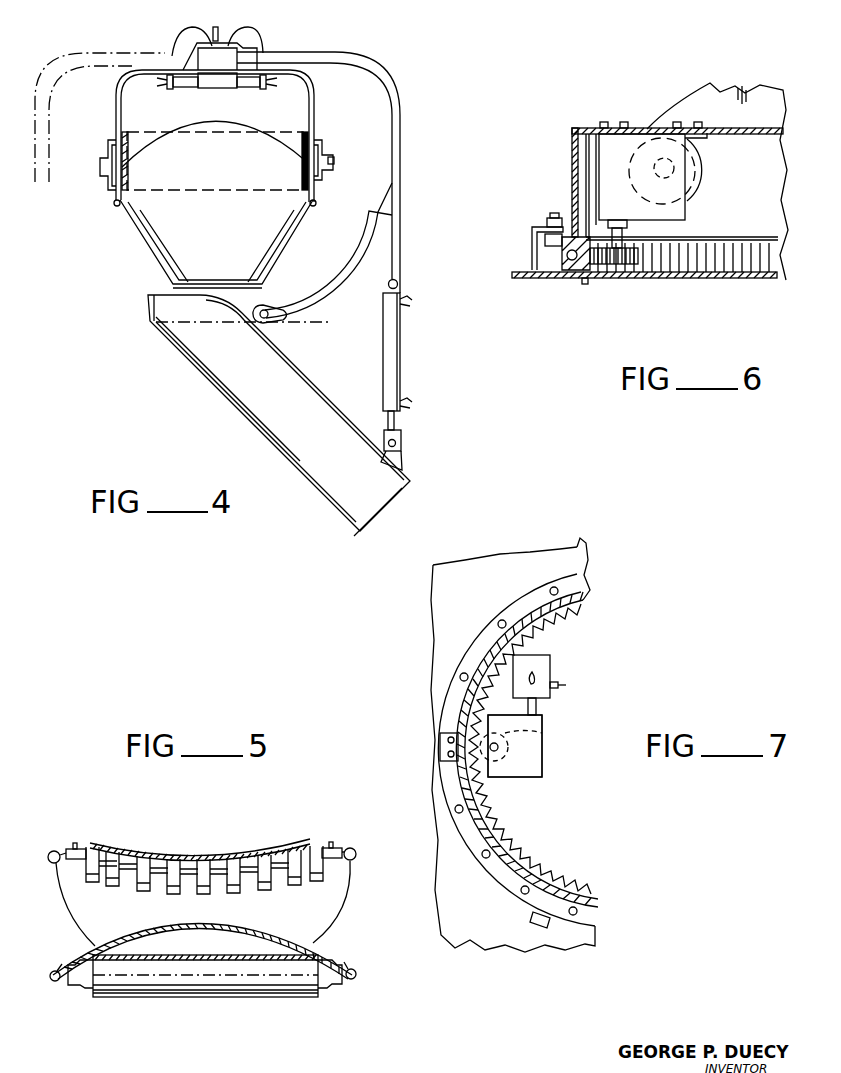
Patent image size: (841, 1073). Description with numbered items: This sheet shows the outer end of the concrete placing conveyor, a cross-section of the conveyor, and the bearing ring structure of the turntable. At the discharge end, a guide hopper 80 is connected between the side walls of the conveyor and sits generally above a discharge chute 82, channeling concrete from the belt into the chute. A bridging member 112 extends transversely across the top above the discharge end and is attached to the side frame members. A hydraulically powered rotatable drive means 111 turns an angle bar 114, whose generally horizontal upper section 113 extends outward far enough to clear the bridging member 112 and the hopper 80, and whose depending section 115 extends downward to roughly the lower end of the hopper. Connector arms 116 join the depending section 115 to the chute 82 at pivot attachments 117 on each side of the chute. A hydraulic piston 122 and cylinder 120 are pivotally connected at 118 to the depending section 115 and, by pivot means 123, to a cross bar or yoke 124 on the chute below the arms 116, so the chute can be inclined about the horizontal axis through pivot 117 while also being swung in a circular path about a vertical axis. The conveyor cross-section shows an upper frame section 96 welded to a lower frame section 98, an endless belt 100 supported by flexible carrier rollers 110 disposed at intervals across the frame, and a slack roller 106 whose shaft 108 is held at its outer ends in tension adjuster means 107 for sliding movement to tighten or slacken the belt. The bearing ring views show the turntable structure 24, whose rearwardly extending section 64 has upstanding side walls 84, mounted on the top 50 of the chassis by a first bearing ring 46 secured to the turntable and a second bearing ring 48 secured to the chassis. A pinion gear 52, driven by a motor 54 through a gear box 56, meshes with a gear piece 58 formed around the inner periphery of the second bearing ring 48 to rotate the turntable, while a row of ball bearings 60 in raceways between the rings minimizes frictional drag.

In FIG. 6, the turntable structure 24 is at (668, 106).
In FIG. 6, the first bearing ring 46 is at (562, 253).
In FIG. 7, the first bearing ring 46 is at (584, 594).
In FIG. 6, the second bearing ring 48 is at (594, 264).
In FIG. 6, the top of the chassis 50 is at (520, 272).
In FIG. 7, the top of the chassis 50 is at (513, 568).
In FIG. 6, the pinion gear 52 is at (680, 212).
In FIG. 7, the pinion gear 52 is at (543, 739).
In FIG. 6, the motor 54 is at (702, 168).
In FIG. 7, the motor 54 is at (551, 668).
In FIG. 7, the gear box 56 is at (542, 763).
In FIG. 6, the gear piece 58 is at (742, 260).
In FIG. 7, the gear piece 58 is at (582, 603).
In FIG. 6, the ball bearings 60 is at (573, 262).
In FIG. 6, the rearwardly extending section 64 is at (571, 175).
In FIG. 7, the rearwardly extending section 64 is at (582, 555).
In FIG. 4, the guide hopper 80 is at (150, 236).
In FIG. 4, the discharge chute 82 is at (245, 403).
In FIG. 6, the side walls 84 is at (730, 100).
In FIG. 5, the upper frame section 96 is at (350, 890).
In FIG. 5, the lower frame section 98 is at (330, 951).
In FIG. 4, the endless belt 100 is at (292, 137).
In FIG. 5, the endless belt 100 is at (233, 853).
In FIG. 4, the slack roller 106 is at (130, 134).
In FIG. 4, the tension adjuster means 107 is at (329, 152).
In FIG. 4, the shaft 108 is at (334, 160).
In FIG. 5, the flexible carrier rollers 110 is at (312, 842).
In FIG. 4, the rotatable drive means 111 is at (212, 60).
In FIG. 4, the bridging member 112 is at (308, 78).
In FIG. 4, the upper section 113 is at (294, 57).
In FIG. 4, the angle bar 114 is at (386, 63).
In FIG. 4, the depending section 115 is at (401, 166).
In FIG. 4, the connector arms 116 is at (330, 288).
In FIG. 4, the pivot attachments 117 is at (282, 318).
In FIG. 4, the pivotal connection 118 is at (398, 285).
In FIG. 4, the cylinder 120 is at (401, 356).
In FIG. 4, the hydraulic piston 122 is at (401, 419).
In FIG. 4, the pivot means 123 is at (402, 445).
In FIG. 4, the cross bar or yoke 124 is at (395, 457).